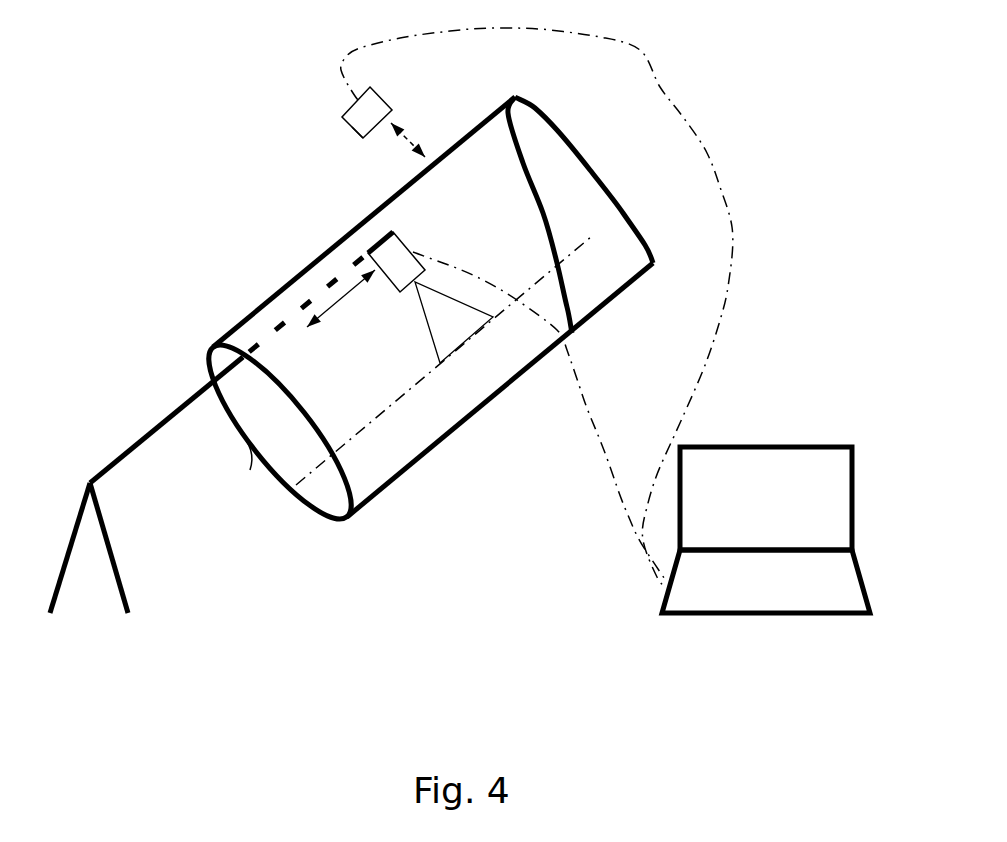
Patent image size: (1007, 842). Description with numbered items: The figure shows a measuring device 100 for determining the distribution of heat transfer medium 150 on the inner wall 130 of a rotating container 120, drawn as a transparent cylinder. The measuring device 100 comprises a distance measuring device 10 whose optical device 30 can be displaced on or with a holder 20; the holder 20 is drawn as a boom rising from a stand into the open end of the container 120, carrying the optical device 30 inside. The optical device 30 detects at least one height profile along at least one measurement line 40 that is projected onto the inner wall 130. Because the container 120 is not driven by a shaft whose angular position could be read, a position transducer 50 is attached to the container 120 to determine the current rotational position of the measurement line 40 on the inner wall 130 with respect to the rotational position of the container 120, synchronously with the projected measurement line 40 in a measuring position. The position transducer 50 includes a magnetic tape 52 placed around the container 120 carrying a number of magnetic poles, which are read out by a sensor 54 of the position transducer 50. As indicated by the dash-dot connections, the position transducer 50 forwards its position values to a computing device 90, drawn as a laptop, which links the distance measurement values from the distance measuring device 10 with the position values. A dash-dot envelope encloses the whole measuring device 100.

The distance measuring device 10 is at (379, 327).
The holder 20 is at (187, 402).
The optical device 30 is at (372, 252).
The measurement line 40 is at (325, 478).
The position transducer 50 is at (303, 141).
The magnetic tape 52 is at (453, 152).
The sensor 54 is at (363, 139).
The computing device 90 is at (803, 458).
The measuring device 100 is at (770, 185).
The container 120 is at (430, 447).
The inner wall 130 is at (226, 472).
The heat transfer medium 150 is at (247, 408).